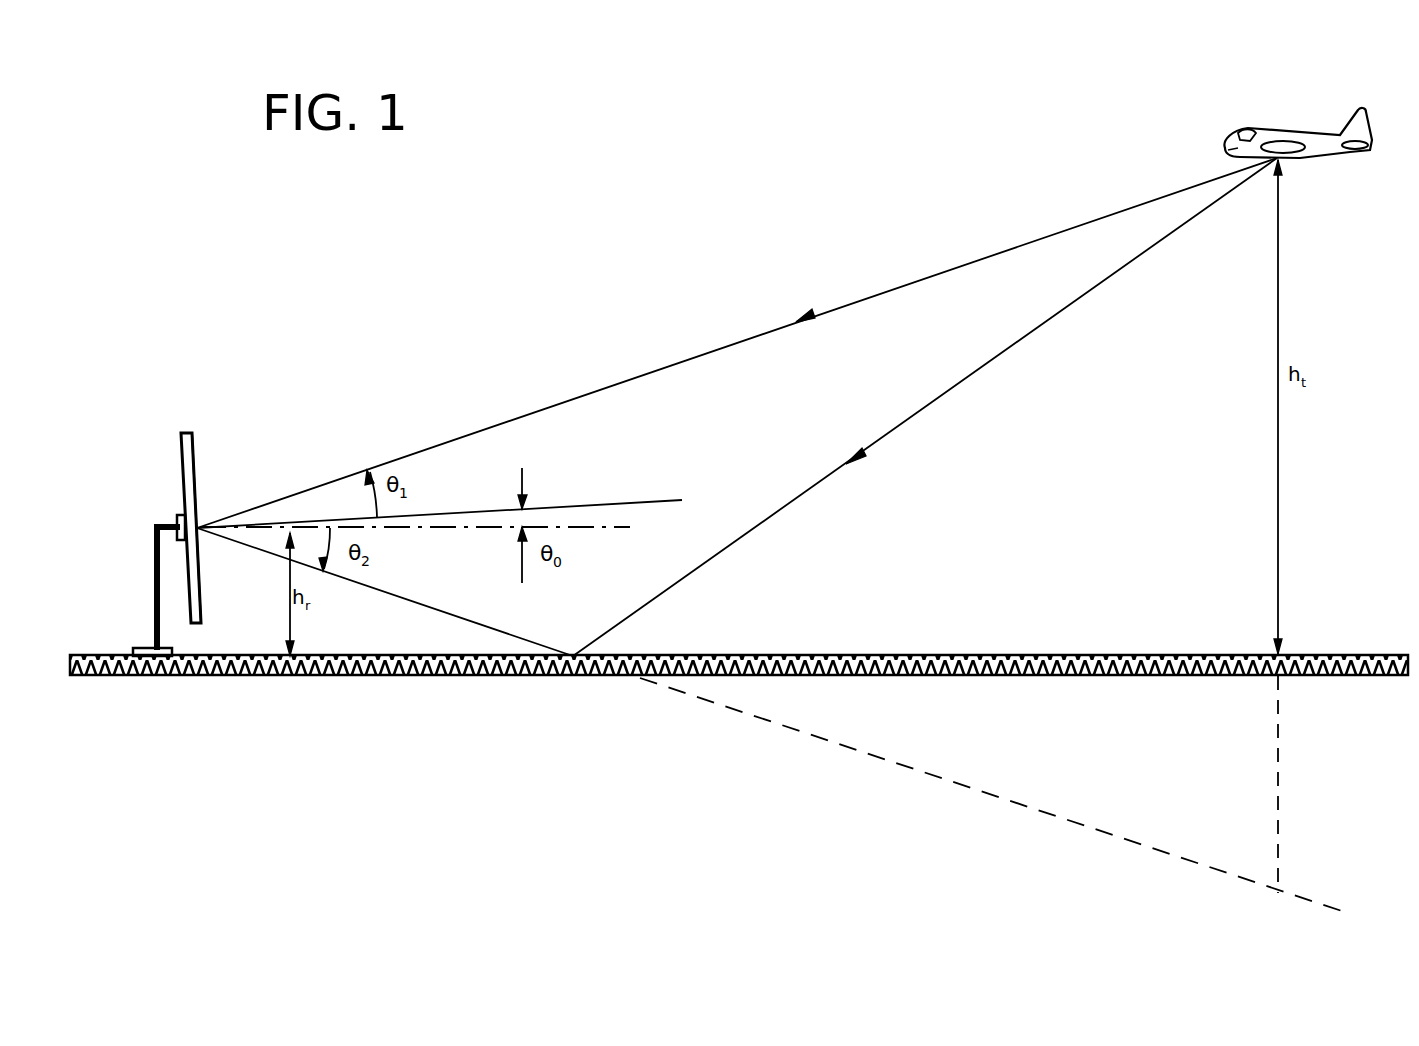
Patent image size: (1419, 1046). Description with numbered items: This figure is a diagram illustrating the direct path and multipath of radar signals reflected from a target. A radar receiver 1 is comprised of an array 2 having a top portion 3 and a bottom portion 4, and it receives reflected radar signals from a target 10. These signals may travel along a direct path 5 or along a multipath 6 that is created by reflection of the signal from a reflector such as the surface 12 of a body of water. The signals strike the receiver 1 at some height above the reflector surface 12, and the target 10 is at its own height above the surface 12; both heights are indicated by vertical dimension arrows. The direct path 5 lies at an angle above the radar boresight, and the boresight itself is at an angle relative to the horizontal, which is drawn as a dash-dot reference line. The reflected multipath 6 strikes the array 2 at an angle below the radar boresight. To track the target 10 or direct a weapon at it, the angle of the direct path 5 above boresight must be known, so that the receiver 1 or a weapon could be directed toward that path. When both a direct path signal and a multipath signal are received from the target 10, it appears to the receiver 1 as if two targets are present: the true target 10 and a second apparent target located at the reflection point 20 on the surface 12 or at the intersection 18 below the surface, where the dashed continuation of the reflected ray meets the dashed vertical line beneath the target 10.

The radar receiver 1 is at (213, 427).
The array 2 is at (183, 470).
The top portion 3 is at (196, 497).
The bottom portion 4 is at (200, 590).
The direct path 5 is at (730, 343).
The multipath 6 is at (886, 437).
The target 10 is at (1257, 128).
The surface 12 is at (797, 655).
The intersection 18 is at (1281, 890).
The reflection point 20 is at (573, 652).